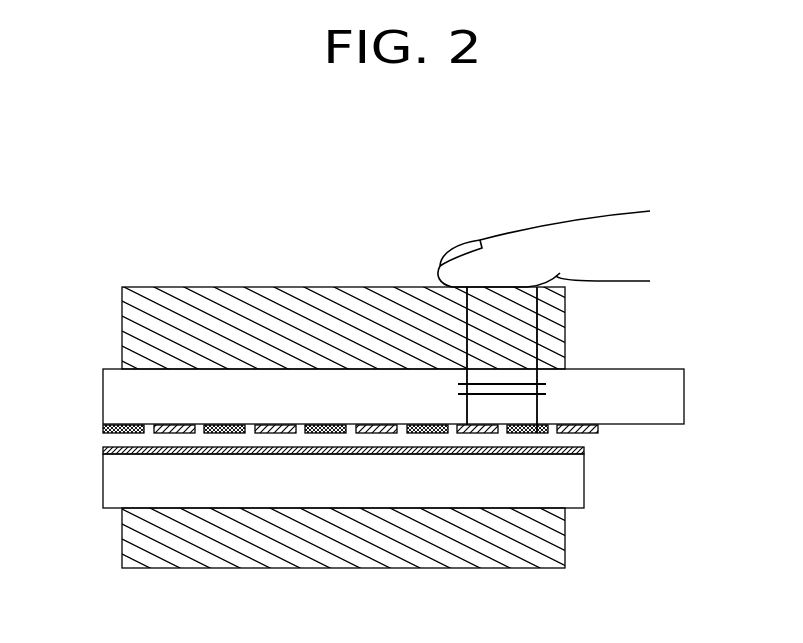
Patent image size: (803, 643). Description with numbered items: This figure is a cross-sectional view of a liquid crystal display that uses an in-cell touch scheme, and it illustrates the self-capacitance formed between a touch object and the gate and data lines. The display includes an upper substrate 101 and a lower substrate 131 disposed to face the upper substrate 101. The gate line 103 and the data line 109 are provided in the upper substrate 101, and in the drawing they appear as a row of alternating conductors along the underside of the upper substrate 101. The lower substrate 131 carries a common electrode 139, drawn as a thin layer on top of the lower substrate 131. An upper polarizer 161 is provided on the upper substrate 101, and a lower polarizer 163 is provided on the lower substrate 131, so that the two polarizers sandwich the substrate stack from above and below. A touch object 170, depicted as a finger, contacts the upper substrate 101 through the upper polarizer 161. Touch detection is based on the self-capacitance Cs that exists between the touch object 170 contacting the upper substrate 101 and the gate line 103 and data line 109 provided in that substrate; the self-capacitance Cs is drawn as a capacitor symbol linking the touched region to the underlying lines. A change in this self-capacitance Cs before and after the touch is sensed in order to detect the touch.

The upper substrate 101 is at (670, 398).
The gate line 103 is at (377, 425).
The data line 109 is at (328, 425).
The lower substrate 131 is at (577, 489).
The common electrode 139 is at (584, 450).
The upper polarizer 161 is at (135, 333).
The lower polarizer 163 is at (135, 538).
The touch object 170 is at (532, 245).
The self-capacitance Cs is at (515, 360).